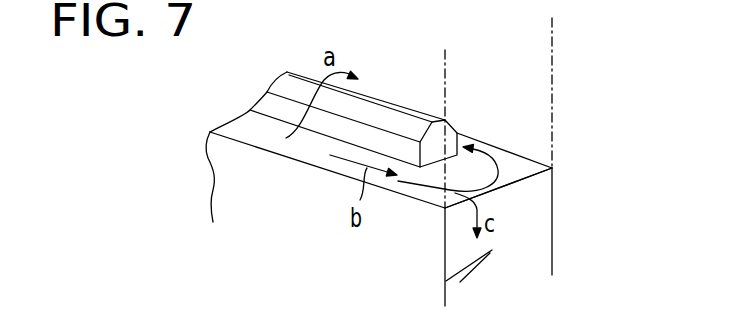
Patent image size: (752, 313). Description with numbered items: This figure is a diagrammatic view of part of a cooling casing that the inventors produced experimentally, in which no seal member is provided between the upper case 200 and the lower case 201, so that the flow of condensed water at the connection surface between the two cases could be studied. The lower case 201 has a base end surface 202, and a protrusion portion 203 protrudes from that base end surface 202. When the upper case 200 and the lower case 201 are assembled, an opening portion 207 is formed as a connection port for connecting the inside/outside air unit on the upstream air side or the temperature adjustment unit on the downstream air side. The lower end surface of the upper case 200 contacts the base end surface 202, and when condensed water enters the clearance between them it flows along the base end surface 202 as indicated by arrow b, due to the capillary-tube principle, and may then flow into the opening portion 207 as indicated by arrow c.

The upper case 200 is at (570, 87).
The lower case 201 is at (568, 256).
The base end surface 202 is at (310, 155).
The protrusion portion 203 is at (400, 103).
The opening portion 207 is at (532, 233).